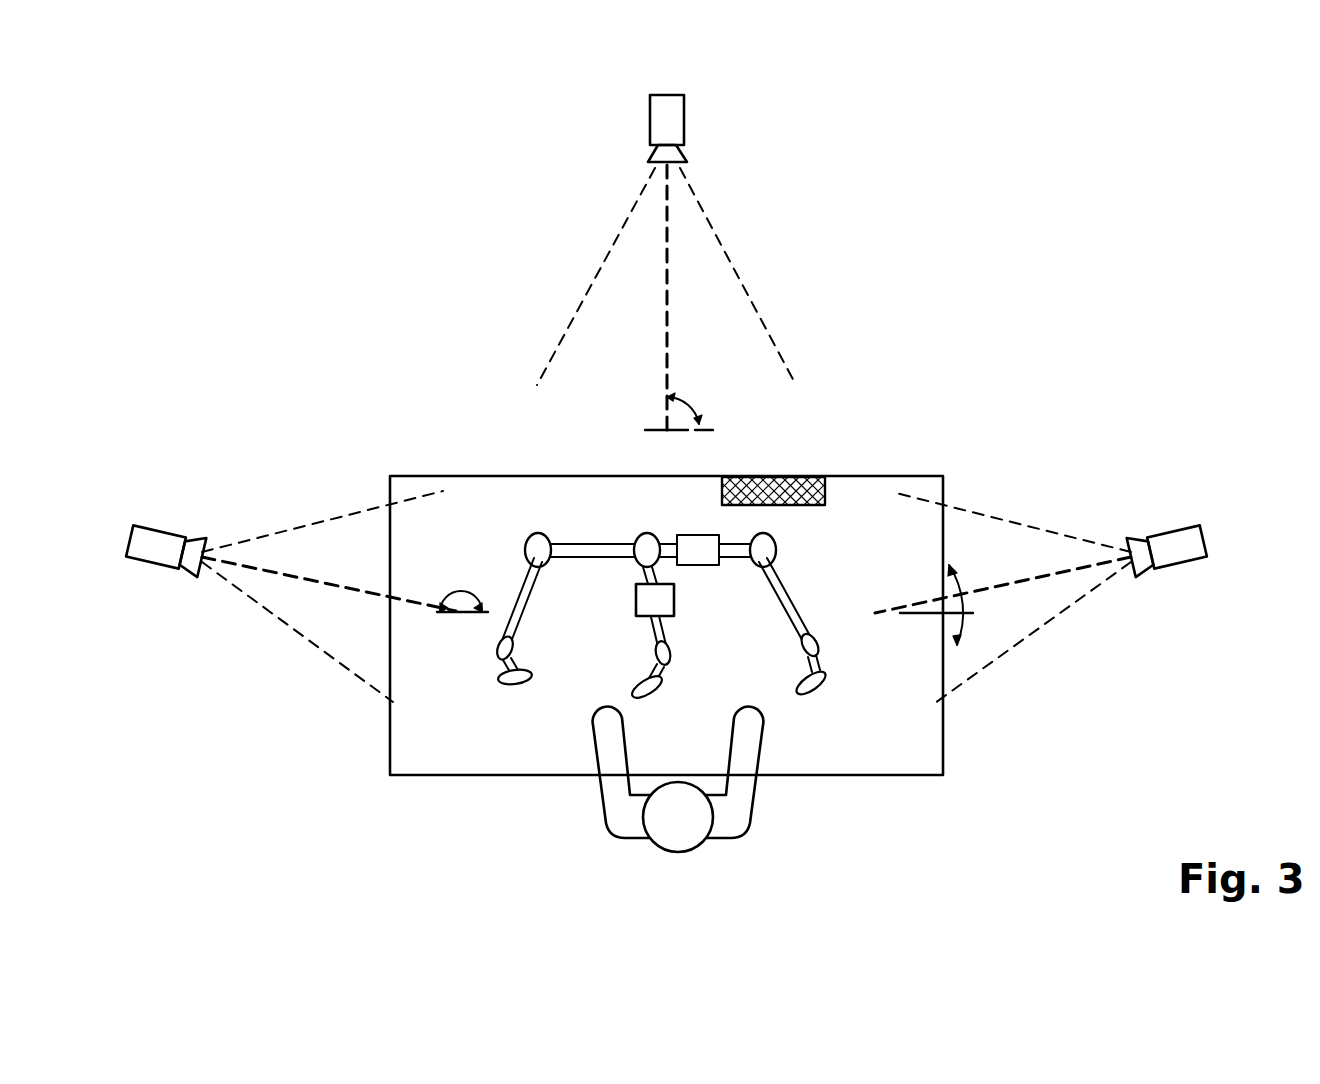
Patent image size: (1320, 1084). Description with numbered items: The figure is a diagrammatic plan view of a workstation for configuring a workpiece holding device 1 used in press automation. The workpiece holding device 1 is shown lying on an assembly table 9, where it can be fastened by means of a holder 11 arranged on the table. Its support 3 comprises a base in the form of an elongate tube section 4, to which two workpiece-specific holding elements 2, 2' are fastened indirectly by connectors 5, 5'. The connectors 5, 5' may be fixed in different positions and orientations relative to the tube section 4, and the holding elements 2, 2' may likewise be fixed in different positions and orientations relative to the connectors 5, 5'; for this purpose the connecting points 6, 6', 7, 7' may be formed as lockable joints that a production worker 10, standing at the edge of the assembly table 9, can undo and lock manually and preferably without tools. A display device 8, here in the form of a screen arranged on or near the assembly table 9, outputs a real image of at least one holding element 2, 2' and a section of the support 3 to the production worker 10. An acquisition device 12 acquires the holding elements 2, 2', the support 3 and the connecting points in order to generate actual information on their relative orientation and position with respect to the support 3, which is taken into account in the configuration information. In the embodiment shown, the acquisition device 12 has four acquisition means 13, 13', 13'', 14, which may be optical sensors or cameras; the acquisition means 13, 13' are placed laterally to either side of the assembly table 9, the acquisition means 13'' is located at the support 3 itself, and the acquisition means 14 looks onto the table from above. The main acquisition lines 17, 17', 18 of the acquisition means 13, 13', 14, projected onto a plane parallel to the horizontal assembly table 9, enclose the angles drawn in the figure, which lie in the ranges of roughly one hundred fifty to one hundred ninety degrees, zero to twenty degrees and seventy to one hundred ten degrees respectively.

The workpiece holding device 1 is at (543, 508).
The workpiece-specific holding element 2 is at (515, 713).
The workpiece-specific holding element 2' is at (831, 705).
The support 3 is at (586, 535).
The tube section 4 is at (618, 560).
The connector 5 is at (545, 602).
The connector 5' is at (814, 602).
The connecting point 6 is at (512, 532).
The connecting point 6' is at (802, 550).
The connecting point 7 is at (469, 651).
The connecting point 7' is at (845, 643).
The display device 8 is at (742, 477).
The assembly table 9 is at (443, 760).
The production worker 10 is at (740, 807).
The holder 11 is at (698, 547).
The acquisition device 12 is at (1200, 412).
The acquisition means 13 is at (165, 517).
The acquisition means 13' is at (1167, 517).
The acquisition means 13'' is at (693, 634).
The acquisition means 14 is at (672, 123).
The main acquisition line 17 is at (329, 592).
The main acquisition line 17' is at (1003, 594).
The main acquisition line 18 is at (667, 352).